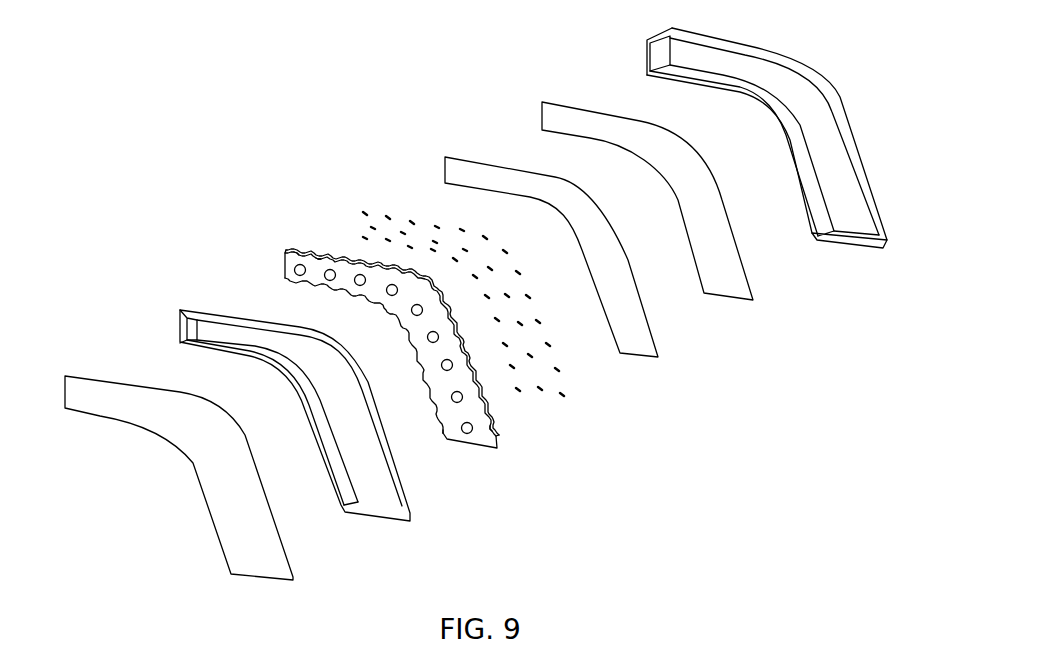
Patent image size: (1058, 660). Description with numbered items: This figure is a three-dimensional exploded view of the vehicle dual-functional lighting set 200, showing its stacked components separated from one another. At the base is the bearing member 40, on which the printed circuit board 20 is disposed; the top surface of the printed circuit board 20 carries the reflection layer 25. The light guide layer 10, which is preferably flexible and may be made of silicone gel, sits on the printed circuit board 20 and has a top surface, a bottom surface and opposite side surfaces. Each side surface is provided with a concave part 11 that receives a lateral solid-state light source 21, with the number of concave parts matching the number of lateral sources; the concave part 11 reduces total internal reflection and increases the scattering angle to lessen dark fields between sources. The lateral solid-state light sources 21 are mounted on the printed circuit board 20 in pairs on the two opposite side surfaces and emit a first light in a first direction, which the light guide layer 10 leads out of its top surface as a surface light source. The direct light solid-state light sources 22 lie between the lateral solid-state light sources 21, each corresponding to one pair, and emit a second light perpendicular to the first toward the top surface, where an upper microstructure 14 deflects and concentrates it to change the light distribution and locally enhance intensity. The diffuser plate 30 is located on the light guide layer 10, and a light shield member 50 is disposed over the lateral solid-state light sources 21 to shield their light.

The vehicle dual-functional lighting set 200 is at (918, 44).
The light guide layer 10 is at (473, 448).
The concave part 11 is at (318, 258).
The upper microstructure 14 is at (283, 270).
The printed circuit board 20 is at (730, 301).
The lateral solid-state light sources 21 is at (518, 391).
The direct light solid-state light sources 22 is at (539, 390).
The reflection layer 25 is at (638, 358).
The diffuser plate 30 is at (122, 378).
The bearing member 40 is at (845, 249).
The light shield member 50 is at (180, 328).